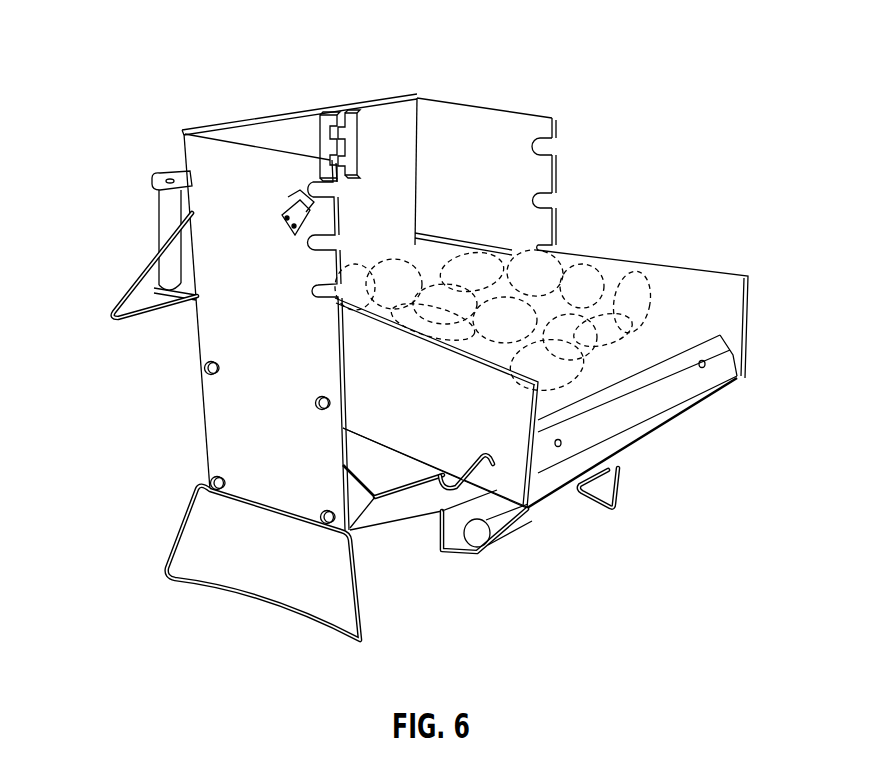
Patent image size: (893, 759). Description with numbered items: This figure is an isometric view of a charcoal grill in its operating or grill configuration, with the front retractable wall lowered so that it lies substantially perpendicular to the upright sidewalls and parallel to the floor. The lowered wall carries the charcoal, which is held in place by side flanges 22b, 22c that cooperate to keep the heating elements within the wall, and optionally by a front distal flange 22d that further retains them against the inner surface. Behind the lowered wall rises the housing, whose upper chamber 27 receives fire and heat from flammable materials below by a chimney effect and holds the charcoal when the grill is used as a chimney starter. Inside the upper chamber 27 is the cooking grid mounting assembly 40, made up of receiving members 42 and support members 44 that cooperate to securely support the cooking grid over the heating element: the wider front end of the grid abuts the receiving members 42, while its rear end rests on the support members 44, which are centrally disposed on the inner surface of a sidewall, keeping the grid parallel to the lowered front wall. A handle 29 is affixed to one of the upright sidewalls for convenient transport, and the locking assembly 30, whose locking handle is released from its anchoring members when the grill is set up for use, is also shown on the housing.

The upper chamber 27 is at (393, 203).
The handle 29 is at (163, 208).
The locking assembly 30 is at (502, 523).
The cooking grid mounting assembly 40 is at (363, 160).
The receiving members 42 is at (548, 152).
The support members 44 is at (352, 138).
The side flange 22b is at (683, 280).
The side flange 22c is at (428, 425).
The front distal flange 22d is at (655, 380).